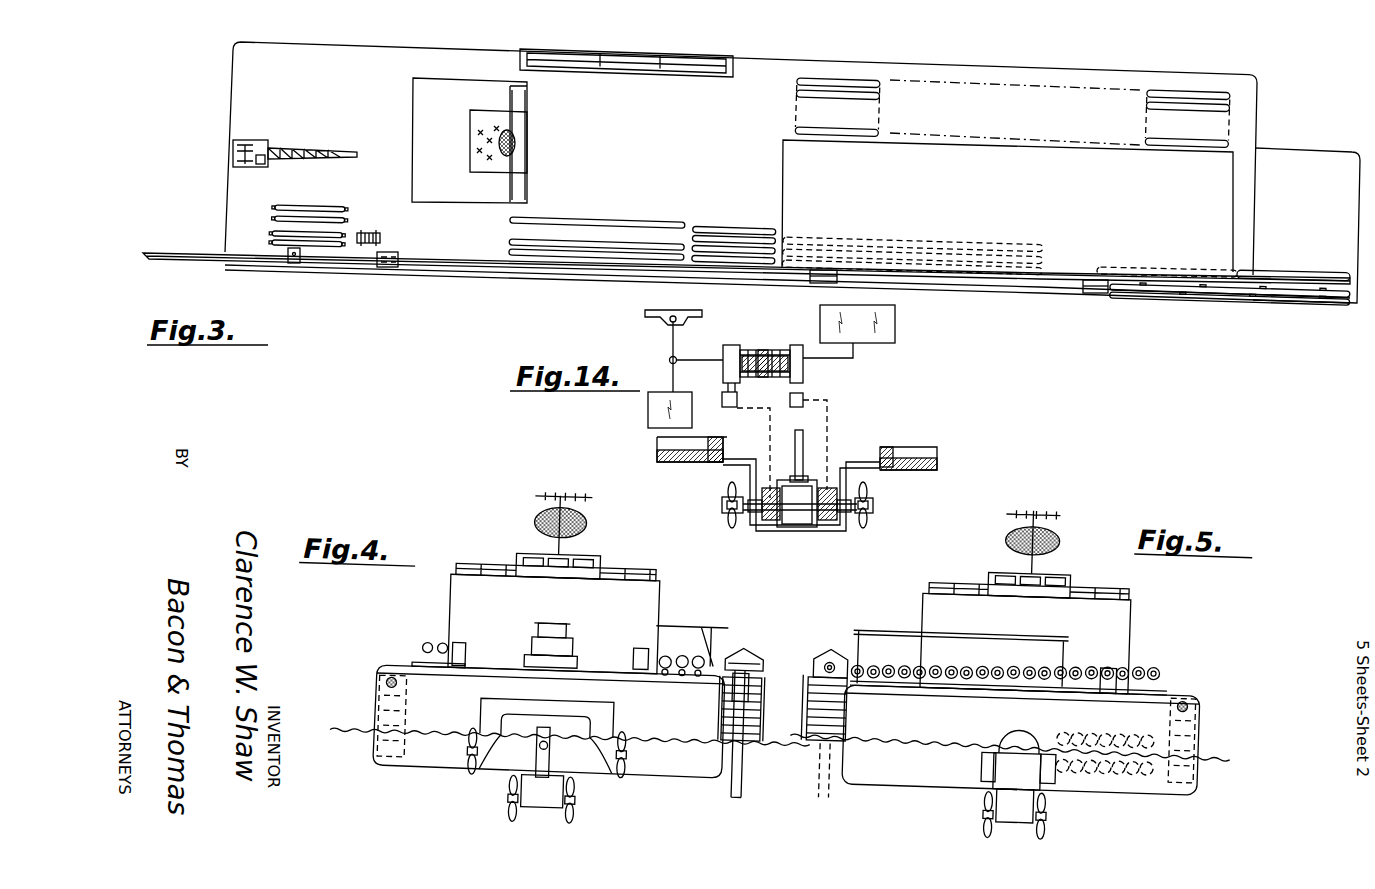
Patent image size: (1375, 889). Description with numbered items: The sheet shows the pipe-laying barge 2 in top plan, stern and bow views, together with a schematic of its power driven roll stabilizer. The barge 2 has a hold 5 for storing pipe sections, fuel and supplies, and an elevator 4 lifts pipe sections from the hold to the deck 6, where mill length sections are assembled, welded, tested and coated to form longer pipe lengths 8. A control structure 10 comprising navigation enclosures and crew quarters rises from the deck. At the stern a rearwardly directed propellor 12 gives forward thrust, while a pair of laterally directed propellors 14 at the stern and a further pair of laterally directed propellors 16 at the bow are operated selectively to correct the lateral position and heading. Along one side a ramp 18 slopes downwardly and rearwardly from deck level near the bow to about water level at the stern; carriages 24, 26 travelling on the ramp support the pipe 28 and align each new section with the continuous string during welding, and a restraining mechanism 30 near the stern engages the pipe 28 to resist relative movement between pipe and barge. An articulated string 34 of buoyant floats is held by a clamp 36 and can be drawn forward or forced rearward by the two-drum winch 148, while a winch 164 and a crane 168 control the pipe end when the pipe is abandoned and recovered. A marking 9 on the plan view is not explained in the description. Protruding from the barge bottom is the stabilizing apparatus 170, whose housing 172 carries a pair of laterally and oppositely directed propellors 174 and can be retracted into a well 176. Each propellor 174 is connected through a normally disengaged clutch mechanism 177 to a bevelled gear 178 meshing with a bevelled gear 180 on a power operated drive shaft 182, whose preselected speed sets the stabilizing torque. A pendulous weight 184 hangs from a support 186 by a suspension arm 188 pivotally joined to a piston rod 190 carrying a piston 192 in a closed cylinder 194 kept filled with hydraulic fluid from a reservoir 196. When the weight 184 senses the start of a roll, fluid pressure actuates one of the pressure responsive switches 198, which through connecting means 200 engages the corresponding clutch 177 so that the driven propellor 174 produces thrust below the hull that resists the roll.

In FIG. 3, the barge 2 is at (225, 52).
In FIG. 14, the barge 2 is at (668, 462).
In FIG. 4, the barge 2 is at (398, 662).
In FIG. 5, the barge 2 is at (1128, 628).
In FIG. 3, the elevator 4 is at (687, 62).
In FIG. 4, the elevator 4 is at (383, 693).
In FIG. 5, the elevator 4 is at (1201, 709).
In FIG. 4, the hold 5 is at (367, 713).
In FIG. 5, the hold 5 is at (1111, 722).
In FIG. 3, the deck 6 is at (771, 72).
In FIG. 4, the deck 6 is at (597, 660).
In FIG. 5, the deck 6 is at (1178, 680).
In FIG. 3, the pipe lengths 8 is at (1070, 307).
In FIG. 5, the pipe lengths 8 is at (829, 655).
In FIG. 3, the section line 9 is at (366, 276).
In FIG. 3, the control structure 10 is at (425, 102).
In FIG. 4, the control structure 10 is at (584, 548).
In FIG. 5, the control structure 10 is at (986, 568).
In FIG. 4, the rearwardly directed propellor 12 is at (559, 721).
In FIG. 4, the laterally directed propellors 14 is at (471, 757).
In FIG. 5, the laterally directed propellors 16 is at (992, 745).
In FIG. 4, the ramp 18 is at (764, 708).
In FIG. 5, the ramp 18 is at (807, 678).
In FIG. 3, the carriage 24 is at (1091, 276).
In FIG. 4, the carriage 24 is at (745, 638).
In FIG. 5, the carriage 24 is at (856, 632).
In FIG. 3, the carriage 26 is at (823, 266).
In FIG. 4, the carriage 26 is at (757, 643).
In FIG. 3, the pipe 28 is at (921, 284).
In FIG. 4, the pipe 28 is at (742, 786).
In FIG. 5, the pipe 28 is at (824, 742).
In FIG. 3, the restraining mechanism 30 is at (390, 252).
In FIG. 4, the restraining mechanism 30 is at (762, 678).
In FIG. 3, the articulated string of floats 34 is at (184, 251).
In FIG. 3, the clamp 36 is at (289, 264).
In FIG. 3, the two-drum winch 148 is at (367, 229).
In FIG. 4, the two-drum winch 148 is at (713, 646).
In FIG. 3, the winch 164 is at (508, 256).
In FIG. 3, the crane 168 is at (258, 137).
In FIG. 4, the crane 168 is at (529, 632).
In FIG. 14, the stabilizing apparatus 170 is at (757, 533).
In FIG. 4, the stabilizing apparatus 170 is at (591, 782).
In FIG. 5, the stabilizing apparatus 170 is at (1057, 803).
In FIG. 14, the housing 172 is at (767, 530).
In FIG. 4, the housing 172 is at (541, 792).
In FIG. 5, the housing 172 is at (1027, 814).
In FIG. 14, the propellors 174 is at (727, 484).
In FIG. 4, the propellors 174 is at (521, 778).
In FIG. 5, the propellors 174 is at (994, 797).
In FIG. 14, the well 176 is at (890, 450).
In FIG. 14, the clutch mechanism 177 is at (765, 490).
In FIG. 14, the bevelled gear 178 is at (780, 527).
In FIG. 14, the bevelled gear 180 is at (793, 530).
In FIG. 14, the drive shaft 182 is at (793, 433).
In FIG. 14, the pendulous weight 184 is at (653, 407).
In FIG. 14, the support 186 is at (645, 310).
In FIG. 14, the suspension arm 188 is at (677, 373).
In FIG. 14, the piston rod 190 is at (698, 357).
In FIG. 14, the piston 192 is at (750, 343).
In FIG. 14, the cylinder 194 is at (782, 343).
In FIG. 14, the reservoir 196 is at (890, 323).
In FIG. 14, the pressure responsive switches 198 is at (740, 400).
In FIG. 14, the connecting means 200 is at (832, 398).